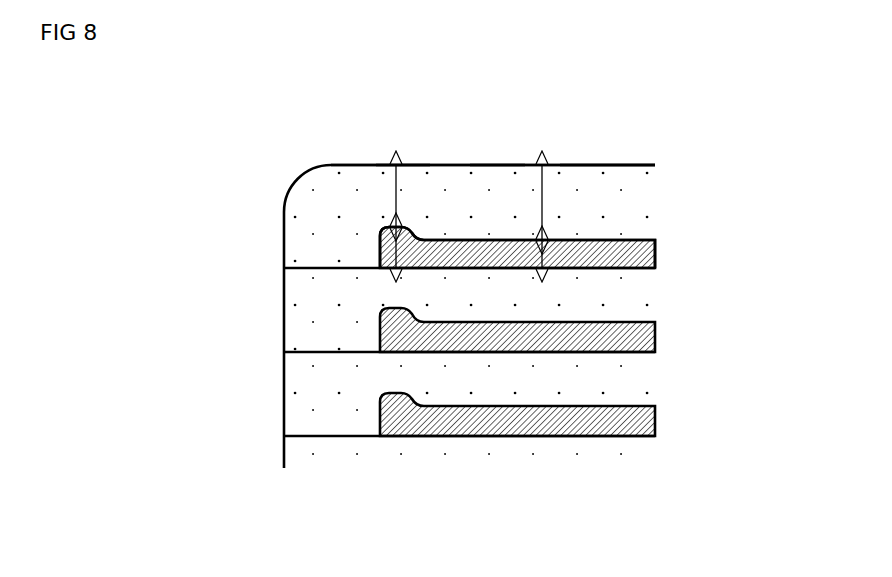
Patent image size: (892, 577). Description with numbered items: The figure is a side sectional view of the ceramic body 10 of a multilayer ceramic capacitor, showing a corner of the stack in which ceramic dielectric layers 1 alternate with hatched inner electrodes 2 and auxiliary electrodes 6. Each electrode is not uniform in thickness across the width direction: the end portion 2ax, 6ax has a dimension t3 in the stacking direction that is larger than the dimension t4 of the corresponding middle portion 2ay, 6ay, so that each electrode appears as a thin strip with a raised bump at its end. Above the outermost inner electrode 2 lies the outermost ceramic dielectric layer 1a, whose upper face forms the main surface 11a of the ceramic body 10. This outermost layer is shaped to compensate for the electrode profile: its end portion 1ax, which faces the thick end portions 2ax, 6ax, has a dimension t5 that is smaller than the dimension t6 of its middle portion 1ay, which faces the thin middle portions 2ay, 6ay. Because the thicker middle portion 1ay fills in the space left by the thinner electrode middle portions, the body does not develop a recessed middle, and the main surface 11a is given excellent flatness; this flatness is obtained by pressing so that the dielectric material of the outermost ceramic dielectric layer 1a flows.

The ceramic body 10 is at (356, 144).
The ceramic dielectric layer 1 is at (330, 393).
The outermost ceramic dielectric layer 1a is at (639, 162).
The end portion of outermost ceramic dielectric layer 1ax is at (405, 200).
The middle portion of outermost ceramic dielectric layer 1ay is at (595, 177).
The main surface 11a is at (495, 165).
The inner electrode 2 is at (517, 379).
The auxiliary electrode 6 is at (503, 352).
The end portion of inner electrode 2ax is at (281, 248).
The end portion of auxiliary electrode 6ax is at (377, 231).
The middle portion of inner electrode 2ay is at (614, 301).
The middle portion of auxiliary electrode 6ay is at (600, 271).
The dimension of end portion of electrode t3 is at (393, 247).
The dimension of middle portion of electrode t4 is at (545, 256).
The dimension of end portion of outermost dielectric layer t5 is at (393, 198).
The dimension of middle portion of outermost dielectric layer t6 is at (545, 201).